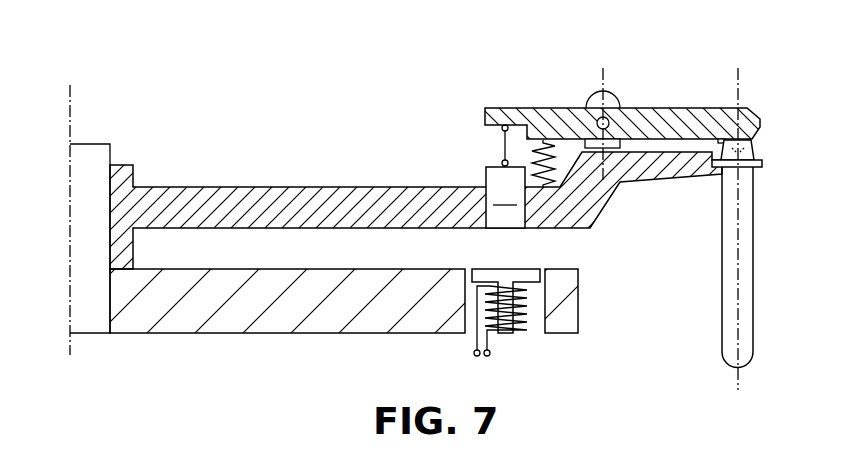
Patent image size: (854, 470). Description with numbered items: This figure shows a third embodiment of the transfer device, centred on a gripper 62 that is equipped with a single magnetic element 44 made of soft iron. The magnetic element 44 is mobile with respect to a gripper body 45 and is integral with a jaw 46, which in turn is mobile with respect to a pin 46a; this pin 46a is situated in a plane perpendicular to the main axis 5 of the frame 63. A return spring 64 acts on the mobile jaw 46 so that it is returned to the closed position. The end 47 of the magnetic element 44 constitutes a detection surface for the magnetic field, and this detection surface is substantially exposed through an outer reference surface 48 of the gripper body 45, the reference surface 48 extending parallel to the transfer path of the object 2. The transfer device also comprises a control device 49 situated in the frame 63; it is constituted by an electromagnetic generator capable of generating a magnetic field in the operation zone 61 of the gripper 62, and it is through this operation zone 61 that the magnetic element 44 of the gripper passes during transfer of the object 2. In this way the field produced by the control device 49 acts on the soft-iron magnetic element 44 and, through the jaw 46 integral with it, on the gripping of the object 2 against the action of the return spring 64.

The object 2 is at (745, 240).
The main axis 5 is at (72, 107).
The magnetic element 44 is at (505, 176).
The gripper body 45 is at (472, 205).
The jaw 46 is at (665, 117).
The pin 46a is at (598, 118).
The end of the magnetic element 47 is at (490, 230).
The outer reference surface 48 is at (553, 230).
The control device 49 is at (507, 345).
The operation zone 61 is at (517, 255).
The gripper 62 is at (642, 98).
The frame 63 is at (348, 320).
The return spring 64 is at (560, 170).